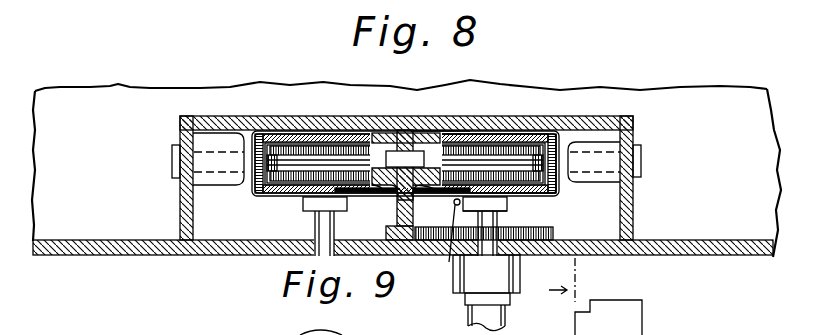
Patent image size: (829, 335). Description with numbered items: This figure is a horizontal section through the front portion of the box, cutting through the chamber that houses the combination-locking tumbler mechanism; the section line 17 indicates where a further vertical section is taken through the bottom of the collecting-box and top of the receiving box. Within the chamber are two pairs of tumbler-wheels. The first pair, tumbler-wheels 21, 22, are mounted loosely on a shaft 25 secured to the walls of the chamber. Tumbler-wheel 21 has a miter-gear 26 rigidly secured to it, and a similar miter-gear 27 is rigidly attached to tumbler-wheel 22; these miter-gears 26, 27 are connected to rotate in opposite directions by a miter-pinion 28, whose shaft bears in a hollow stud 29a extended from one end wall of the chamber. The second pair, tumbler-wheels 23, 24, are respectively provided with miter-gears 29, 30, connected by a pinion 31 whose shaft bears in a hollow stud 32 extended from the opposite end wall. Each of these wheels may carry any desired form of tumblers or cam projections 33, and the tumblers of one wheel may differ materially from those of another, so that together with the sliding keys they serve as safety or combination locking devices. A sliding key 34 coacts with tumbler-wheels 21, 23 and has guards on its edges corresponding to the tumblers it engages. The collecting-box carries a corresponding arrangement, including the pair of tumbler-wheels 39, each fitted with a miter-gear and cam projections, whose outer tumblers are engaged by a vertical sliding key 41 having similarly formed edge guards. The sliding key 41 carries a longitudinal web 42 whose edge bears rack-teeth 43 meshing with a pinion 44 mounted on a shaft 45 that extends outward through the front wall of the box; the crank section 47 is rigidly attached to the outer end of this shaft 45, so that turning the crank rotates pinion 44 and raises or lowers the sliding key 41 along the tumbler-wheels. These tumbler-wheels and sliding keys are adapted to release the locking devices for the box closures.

The section line 17 is at (562, 280).
The tumbler-wheel 21 is at (313, 152).
The tumbler-wheel 22 is at (358, 178).
The tumbler-wheel 23 is at (516, 146).
The tumbler-wheel 24 is at (540, 194).
The shaft 25 is at (315, 224).
The miter-gear 26 is at (380, 133).
The miter-gear 27 is at (283, 194).
The miter-pinion 28 is at (250, 148).
The miter-gear 29 is at (462, 133).
The hollow stud 29a is at (206, 160).
The miter-gear 30 is at (421, 196).
The pinion 31 is at (565, 144).
The hollow stud 32 is at (603, 183).
The tumblers or cam projections 33 is at (558, 195).
The sliding key 34 is at (423, 133).
The tumbler-wheels 39 is at (477, 293).
The sliding key 41 is at (250, 192).
The web 42 is at (383, 243).
The rack-teeth 43 is at (405, 242).
The pinion 44 is at (554, 233).
The shaft 45 is at (512, 259).
The crank section 47 is at (402, 178).